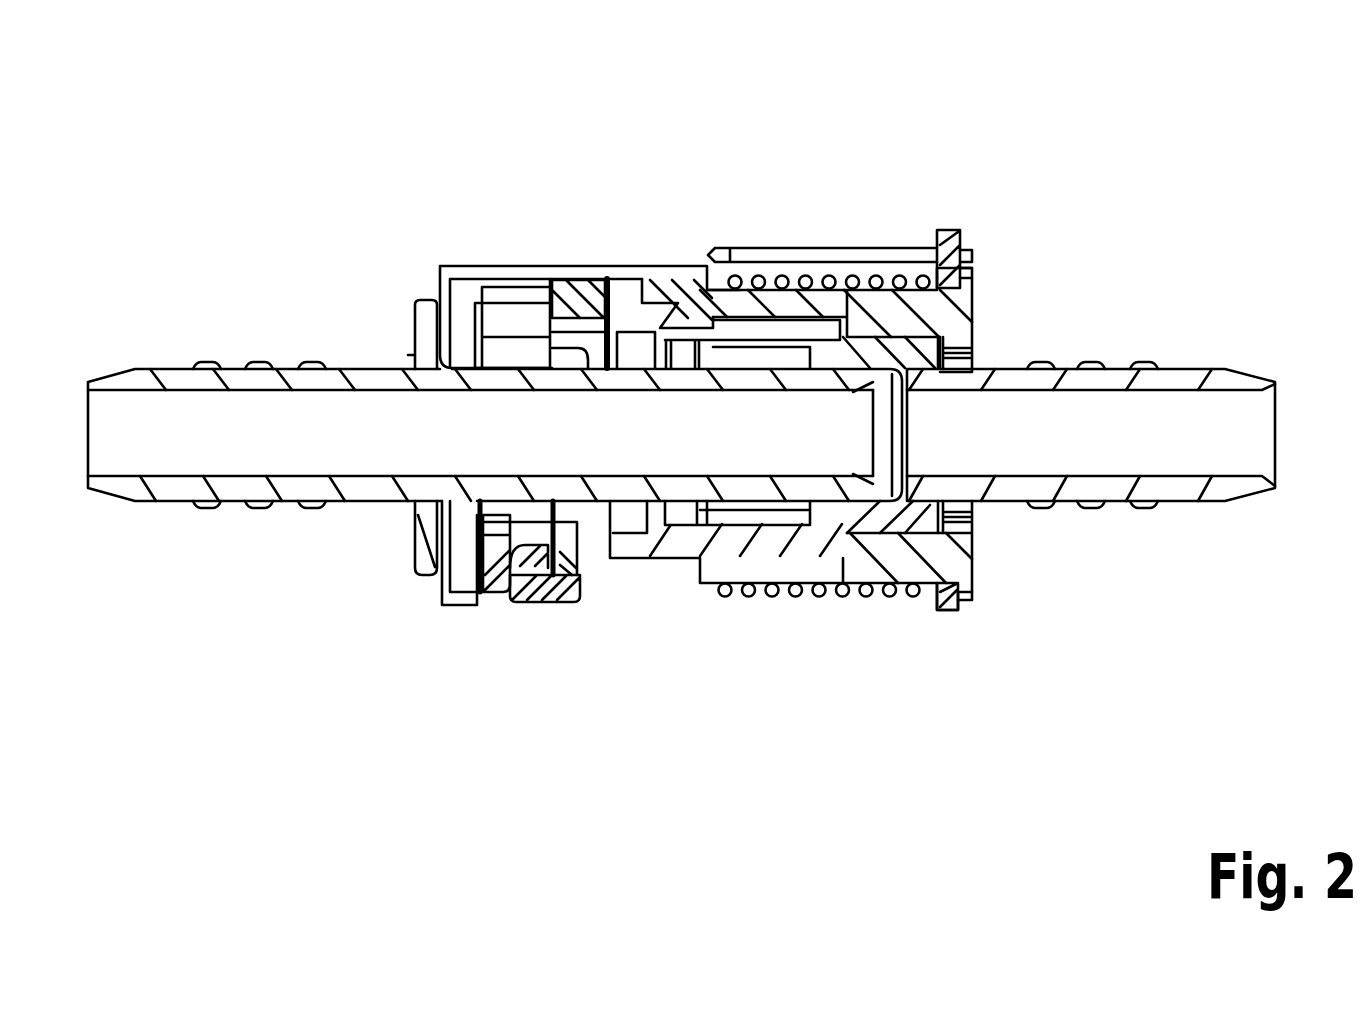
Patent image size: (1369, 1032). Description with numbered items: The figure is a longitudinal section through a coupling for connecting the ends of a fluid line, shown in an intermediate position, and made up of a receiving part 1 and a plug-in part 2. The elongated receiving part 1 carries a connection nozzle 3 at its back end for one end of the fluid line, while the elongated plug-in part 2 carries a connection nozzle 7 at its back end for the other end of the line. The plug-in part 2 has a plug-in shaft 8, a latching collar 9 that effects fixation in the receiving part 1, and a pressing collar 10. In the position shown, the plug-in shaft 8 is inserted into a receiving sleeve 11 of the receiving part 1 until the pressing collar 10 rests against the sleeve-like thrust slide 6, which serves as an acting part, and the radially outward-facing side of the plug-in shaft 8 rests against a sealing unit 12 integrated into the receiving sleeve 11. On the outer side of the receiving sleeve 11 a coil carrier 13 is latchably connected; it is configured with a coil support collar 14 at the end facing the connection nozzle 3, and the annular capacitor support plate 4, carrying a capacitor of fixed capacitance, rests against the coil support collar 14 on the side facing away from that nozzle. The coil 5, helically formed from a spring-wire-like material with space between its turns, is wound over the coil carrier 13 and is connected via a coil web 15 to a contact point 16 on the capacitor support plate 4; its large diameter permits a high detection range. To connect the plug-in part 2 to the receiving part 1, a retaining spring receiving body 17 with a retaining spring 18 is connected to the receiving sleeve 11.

The receiving part 1 is at (1126, 148).
The plug-in part 2 is at (330, 236).
The connection nozzle 3 is at (1188, 490).
The capacitor support plate 4 is at (950, 250).
The coil 5 is at (828, 280).
The thrust slide 6 is at (468, 265).
The connection nozzle 7 is at (257, 490).
The plug-in shaft 8 is at (628, 492).
The latching collar 9 is at (563, 508).
The pressing collar 10 is at (417, 580).
The receiving sleeve 11 is at (648, 265).
The sealing unit 12 is at (746, 365).
The coil carrier 13 is at (690, 265).
The coil support collar 14 is at (965, 286).
The coil web 15 is at (893, 260).
The contact point 16 is at (965, 280).
The retaining spring receiving body 17 is at (518, 265).
The retaining spring 18 is at (573, 265).